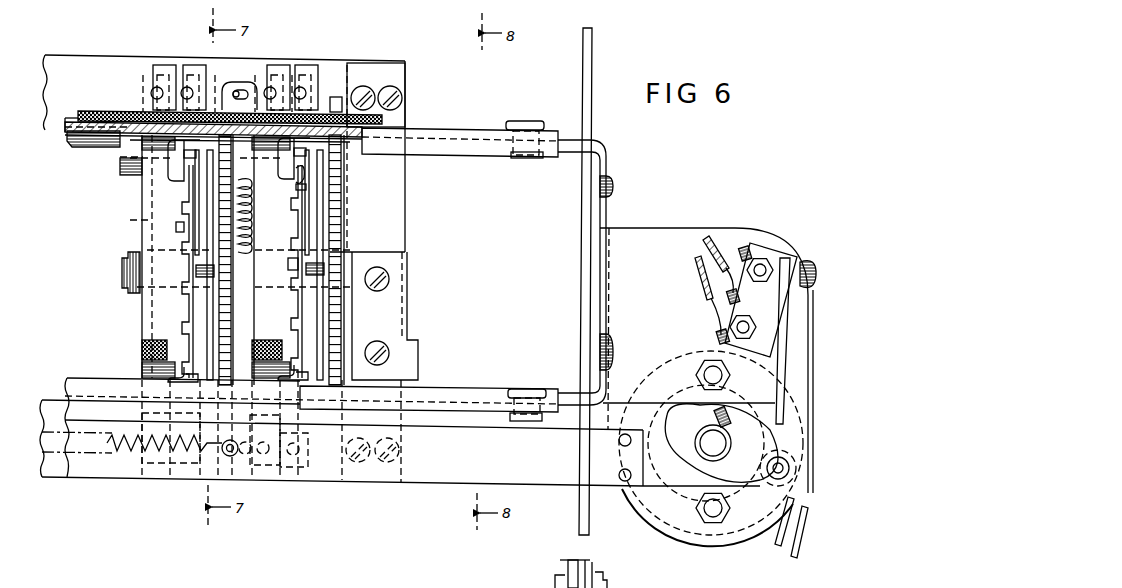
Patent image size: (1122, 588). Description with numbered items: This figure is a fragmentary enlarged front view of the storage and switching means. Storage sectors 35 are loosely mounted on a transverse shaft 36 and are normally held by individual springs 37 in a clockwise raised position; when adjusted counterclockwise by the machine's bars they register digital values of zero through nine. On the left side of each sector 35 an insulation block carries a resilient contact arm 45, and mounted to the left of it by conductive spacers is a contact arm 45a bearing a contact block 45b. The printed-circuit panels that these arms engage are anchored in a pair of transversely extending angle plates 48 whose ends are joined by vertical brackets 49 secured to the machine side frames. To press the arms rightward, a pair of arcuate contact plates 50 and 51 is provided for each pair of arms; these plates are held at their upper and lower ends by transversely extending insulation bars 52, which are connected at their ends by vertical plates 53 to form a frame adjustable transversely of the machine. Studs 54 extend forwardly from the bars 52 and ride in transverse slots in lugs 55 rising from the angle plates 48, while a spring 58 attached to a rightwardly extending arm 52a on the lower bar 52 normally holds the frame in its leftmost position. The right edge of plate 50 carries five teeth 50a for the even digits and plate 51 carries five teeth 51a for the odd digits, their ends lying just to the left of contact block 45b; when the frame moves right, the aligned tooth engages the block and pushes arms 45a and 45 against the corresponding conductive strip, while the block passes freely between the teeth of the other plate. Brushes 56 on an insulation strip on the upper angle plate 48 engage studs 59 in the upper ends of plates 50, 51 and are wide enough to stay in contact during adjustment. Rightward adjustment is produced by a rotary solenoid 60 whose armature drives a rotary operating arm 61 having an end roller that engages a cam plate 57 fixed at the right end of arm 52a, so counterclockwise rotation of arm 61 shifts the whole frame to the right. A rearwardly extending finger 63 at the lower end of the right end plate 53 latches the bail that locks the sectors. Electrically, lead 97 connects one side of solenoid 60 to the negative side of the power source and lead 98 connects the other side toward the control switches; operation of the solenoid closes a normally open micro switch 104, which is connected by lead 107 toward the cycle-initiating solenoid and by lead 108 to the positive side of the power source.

The sector 35 is at (222, 328).
The transverse shaft 36 is at (122, 277).
The spring 37 is at (253, 225).
The resilient contact arm 45 is at (214, 240).
The contact arm 45a is at (300, 177).
The contact block 45b is at (306, 188).
The angle plate 48 is at (442, 143).
The bracket 49 is at (578, 143).
The arcuate contact plate 50 is at (175, 373).
The teeth 50a is at (185, 295).
The arcuate contact plate 51 is at (185, 188).
The teeth 51a is at (186, 224).
The insulation bar 52 is at (60, 128).
The arm 52a is at (455, 470).
The vertical plate 53 is at (390, 214).
The stud 54 is at (270, 90).
The lug 55 is at (235, 92).
The brush 56 is at (160, 70).
The cam plate 57 is at (790, 396).
The spring 58 is at (113, 453).
The stud 59 is at (152, 93).
The rotary solenoid 60 is at (665, 372).
The rotary operating arm 61 is at (757, 443).
The finger 63 is at (420, 358).
The lead 97 is at (790, 537).
The lead 98 is at (775, 587).
The normally open switch 104 is at (764, 256).
The lead 107 is at (697, 266).
The lead 108 is at (705, 247).